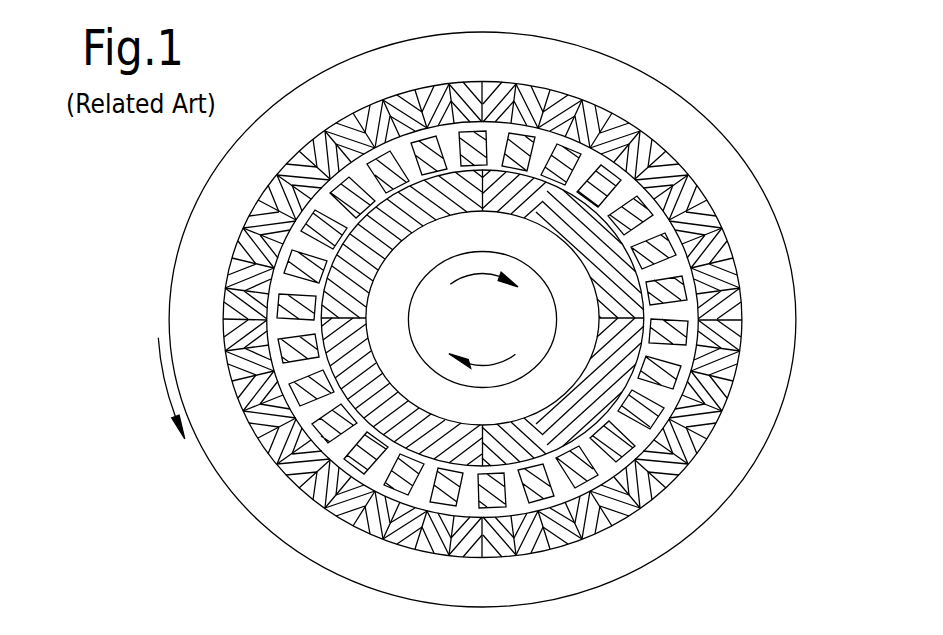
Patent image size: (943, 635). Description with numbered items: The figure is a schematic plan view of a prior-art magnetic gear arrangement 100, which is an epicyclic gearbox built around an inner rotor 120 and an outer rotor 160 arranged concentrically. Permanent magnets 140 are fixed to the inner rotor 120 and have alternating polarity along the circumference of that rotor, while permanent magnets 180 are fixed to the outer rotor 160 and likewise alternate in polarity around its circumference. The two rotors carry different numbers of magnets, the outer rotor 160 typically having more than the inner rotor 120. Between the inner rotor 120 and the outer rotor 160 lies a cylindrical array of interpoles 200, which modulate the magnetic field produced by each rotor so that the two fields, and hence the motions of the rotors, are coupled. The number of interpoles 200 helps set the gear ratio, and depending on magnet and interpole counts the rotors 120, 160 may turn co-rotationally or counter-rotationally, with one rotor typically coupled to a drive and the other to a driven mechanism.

The magnetic gear arrangement 100 is at (757, 101).
The inner rotor 120 is at (393, 271).
The permanent magnets 140 is at (610, 527).
The outer rotor 160 is at (243, 493).
The permanent magnets 180 is at (652, 477).
The interpoles 200 is at (640, 405).